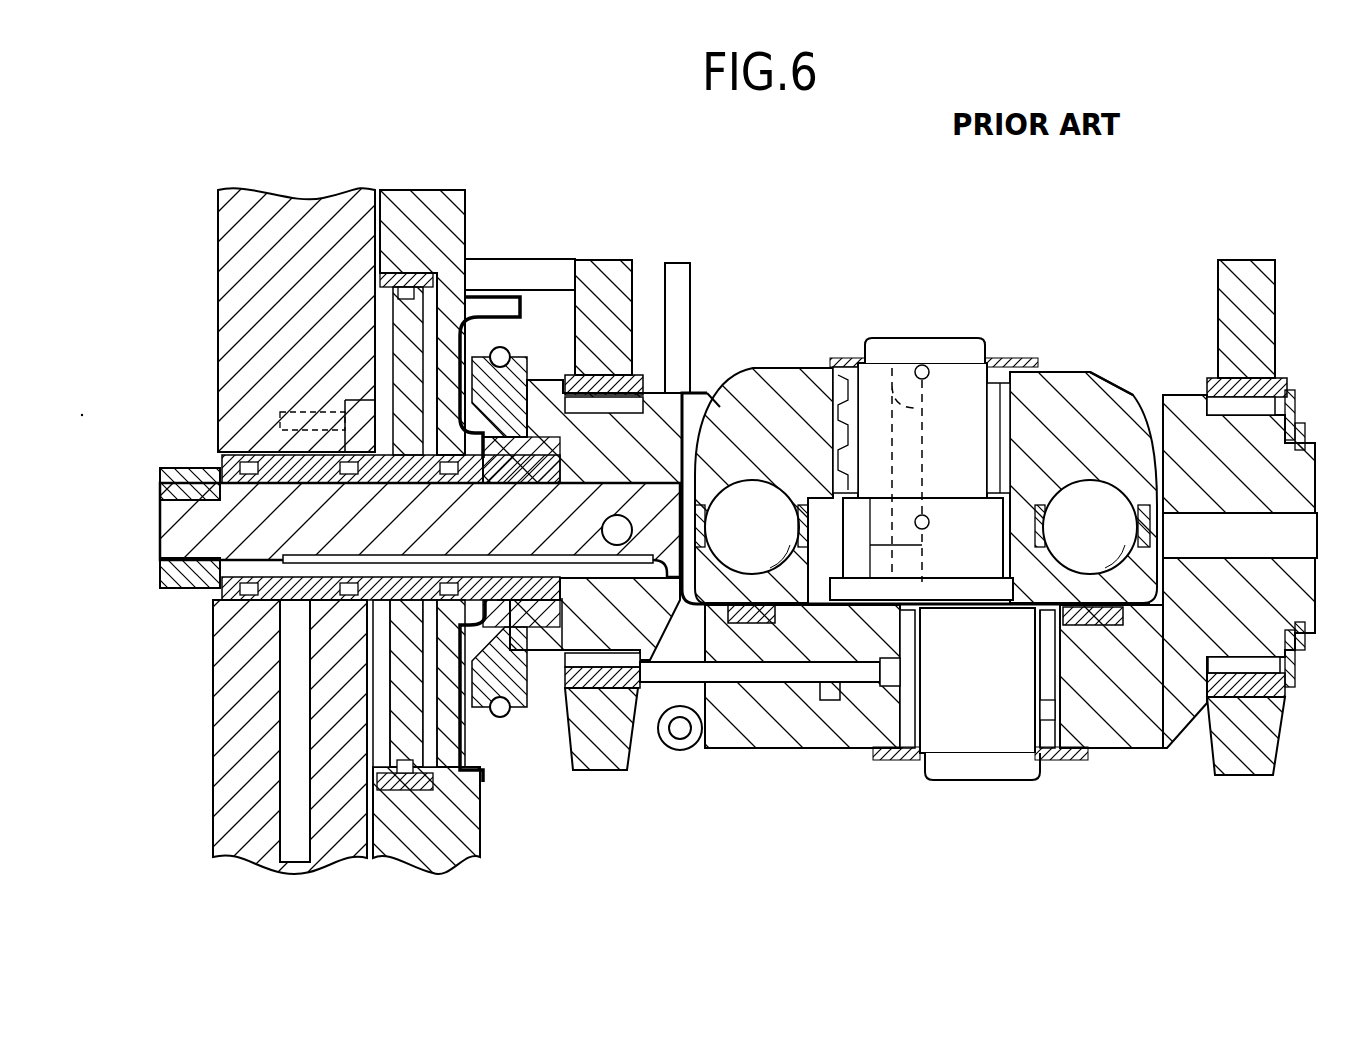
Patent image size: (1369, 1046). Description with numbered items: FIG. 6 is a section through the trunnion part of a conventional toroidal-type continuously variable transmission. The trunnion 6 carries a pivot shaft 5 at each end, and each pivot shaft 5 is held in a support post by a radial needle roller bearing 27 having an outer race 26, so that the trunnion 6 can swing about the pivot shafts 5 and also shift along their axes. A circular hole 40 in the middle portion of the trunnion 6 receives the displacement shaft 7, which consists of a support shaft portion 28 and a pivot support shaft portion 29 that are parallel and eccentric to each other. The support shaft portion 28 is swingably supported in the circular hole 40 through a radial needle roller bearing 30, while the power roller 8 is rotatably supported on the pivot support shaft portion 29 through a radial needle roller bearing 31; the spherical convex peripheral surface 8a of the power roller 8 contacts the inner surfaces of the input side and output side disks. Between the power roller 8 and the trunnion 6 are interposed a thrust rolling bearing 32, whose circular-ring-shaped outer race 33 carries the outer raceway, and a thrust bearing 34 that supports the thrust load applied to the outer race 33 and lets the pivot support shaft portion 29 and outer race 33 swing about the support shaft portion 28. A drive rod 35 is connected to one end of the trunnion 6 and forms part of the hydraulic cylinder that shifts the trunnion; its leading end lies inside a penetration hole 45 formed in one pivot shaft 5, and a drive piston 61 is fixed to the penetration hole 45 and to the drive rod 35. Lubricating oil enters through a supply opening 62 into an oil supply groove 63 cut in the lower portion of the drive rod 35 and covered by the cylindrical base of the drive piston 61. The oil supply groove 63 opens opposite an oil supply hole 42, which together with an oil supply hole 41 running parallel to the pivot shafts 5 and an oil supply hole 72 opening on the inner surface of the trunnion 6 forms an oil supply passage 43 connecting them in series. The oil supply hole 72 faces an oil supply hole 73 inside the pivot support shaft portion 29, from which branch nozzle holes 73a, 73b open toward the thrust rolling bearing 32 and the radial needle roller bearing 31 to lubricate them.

The pivot shaft 5 is at (572, 435).
The trunnion 6 is at (856, 735).
The displacement shaft 7 is at (833, 585).
The power roller 8 is at (1052, 385).
The peripheral surface 8a is at (1100, 378).
The outer race 26 is at (615, 300).
The radial needle roller bearing 27 is at (594, 400).
The support shaft portion 28 is at (946, 735).
The pivot support shaft portion 29 is at (962, 390).
The radial needle roller bearing 30 is at (1042, 675).
The radial needle roller bearing 31 is at (1010, 400).
The thrust rolling bearing 32 is at (1100, 492).
The outer race 33 is at (1130, 590).
The thrust bearing 34 is at (1095, 628).
The drive rod 35 is at (185, 505).
The circular hole 40 is at (1040, 718).
The oil supply hole 41 is at (758, 672).
The oil supply hole 42 is at (650, 705).
The oil supply passage 43 is at (724, 690).
The penetration hole 45 is at (508, 362).
The drive piston 61 is at (412, 703).
The supply opening 62 is at (257, 610).
The oil supply groove 63 is at (325, 562).
The oil supply hole 72 is at (830, 708).
The oil supply hole 73 is at (896, 368).
The branch nozzle hole 73a is at (922, 364).
The branch nozzle hole 73b is at (915, 522).